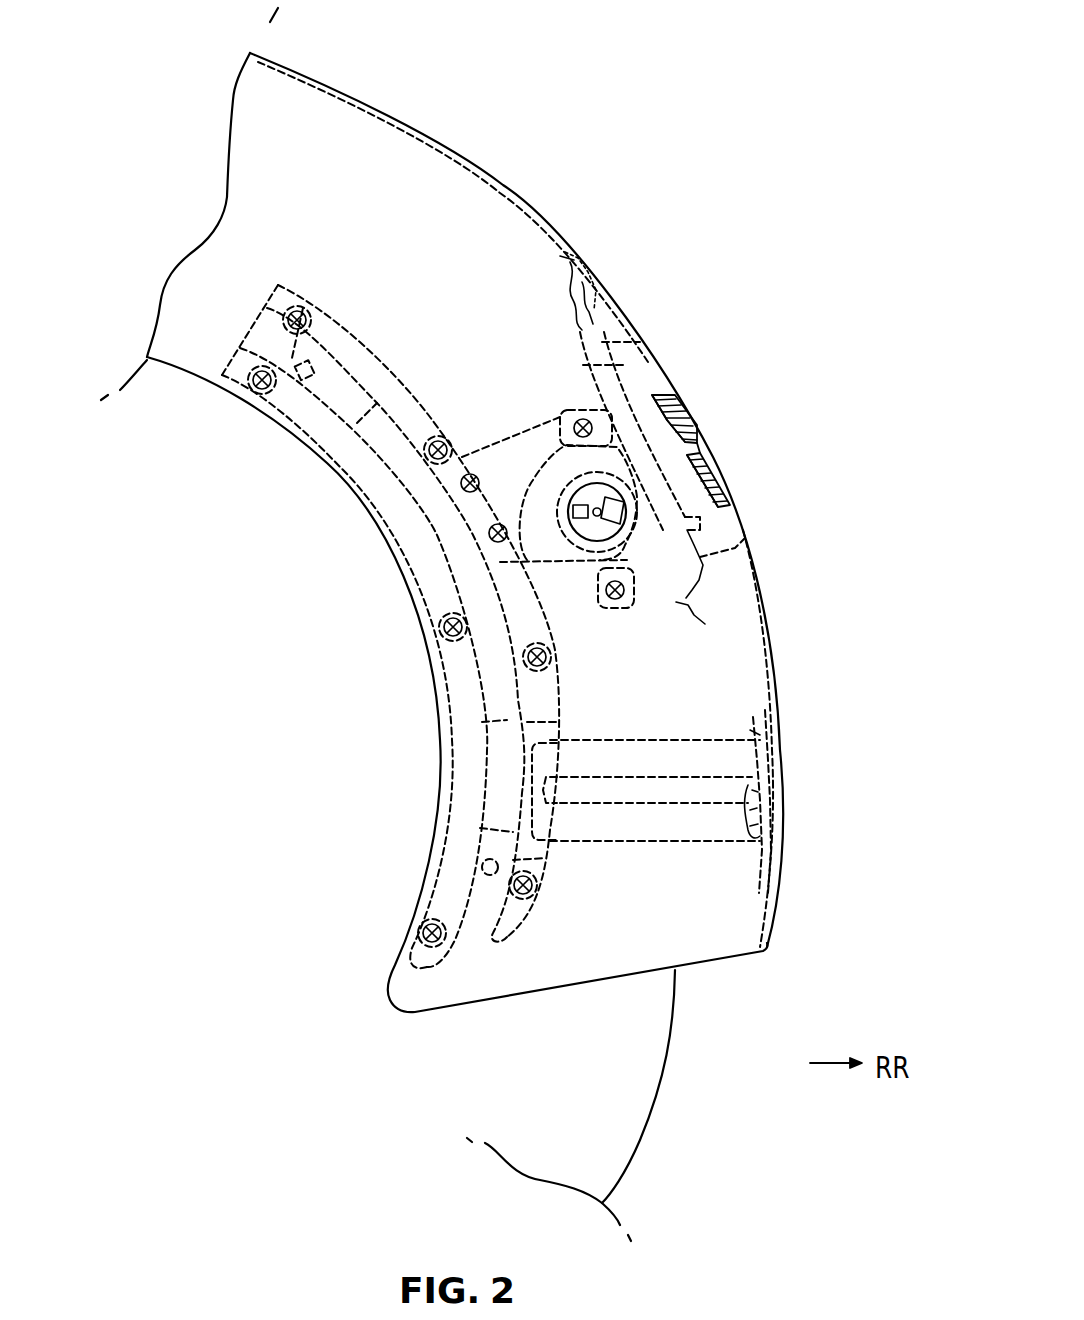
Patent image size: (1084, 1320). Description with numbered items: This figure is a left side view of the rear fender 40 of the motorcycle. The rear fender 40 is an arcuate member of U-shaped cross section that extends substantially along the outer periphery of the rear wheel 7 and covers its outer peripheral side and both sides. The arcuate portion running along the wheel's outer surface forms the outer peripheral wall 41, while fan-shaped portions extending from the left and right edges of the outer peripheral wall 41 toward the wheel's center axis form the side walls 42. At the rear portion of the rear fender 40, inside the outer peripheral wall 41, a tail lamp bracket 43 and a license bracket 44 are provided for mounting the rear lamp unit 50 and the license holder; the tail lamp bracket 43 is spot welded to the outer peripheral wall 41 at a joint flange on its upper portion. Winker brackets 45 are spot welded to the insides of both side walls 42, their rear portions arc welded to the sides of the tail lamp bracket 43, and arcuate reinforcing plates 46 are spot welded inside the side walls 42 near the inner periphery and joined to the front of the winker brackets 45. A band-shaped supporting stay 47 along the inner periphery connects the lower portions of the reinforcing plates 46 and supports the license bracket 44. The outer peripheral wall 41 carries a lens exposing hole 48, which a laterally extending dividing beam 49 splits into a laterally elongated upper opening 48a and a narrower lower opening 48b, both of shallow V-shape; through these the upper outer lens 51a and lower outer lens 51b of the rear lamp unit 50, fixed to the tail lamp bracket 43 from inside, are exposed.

The rear wheel 7 is at (657, 1094).
The rear fender 40 is at (444, 138).
The outer peripheral wall 41 is at (502, 186).
The side walls 42 is at (353, 134).
The tail lamp bracket 43 is at (740, 548).
The license bracket 44 is at (788, 822).
The winker brackets 45 is at (620, 358).
The reinforcing plates 46 is at (445, 705).
The supporting stay 47 is at (703, 843).
The lens exposing hole 48 is at (777, 422).
The upper opening 48a is at (700, 411).
The lower opening 48b is at (723, 482).
The dividing beam 49 is at (715, 457).
The rear lamp unit 50 is at (705, 420).
The upper outer lens 51a is at (698, 432).
The lower outer lens 51b is at (730, 497).